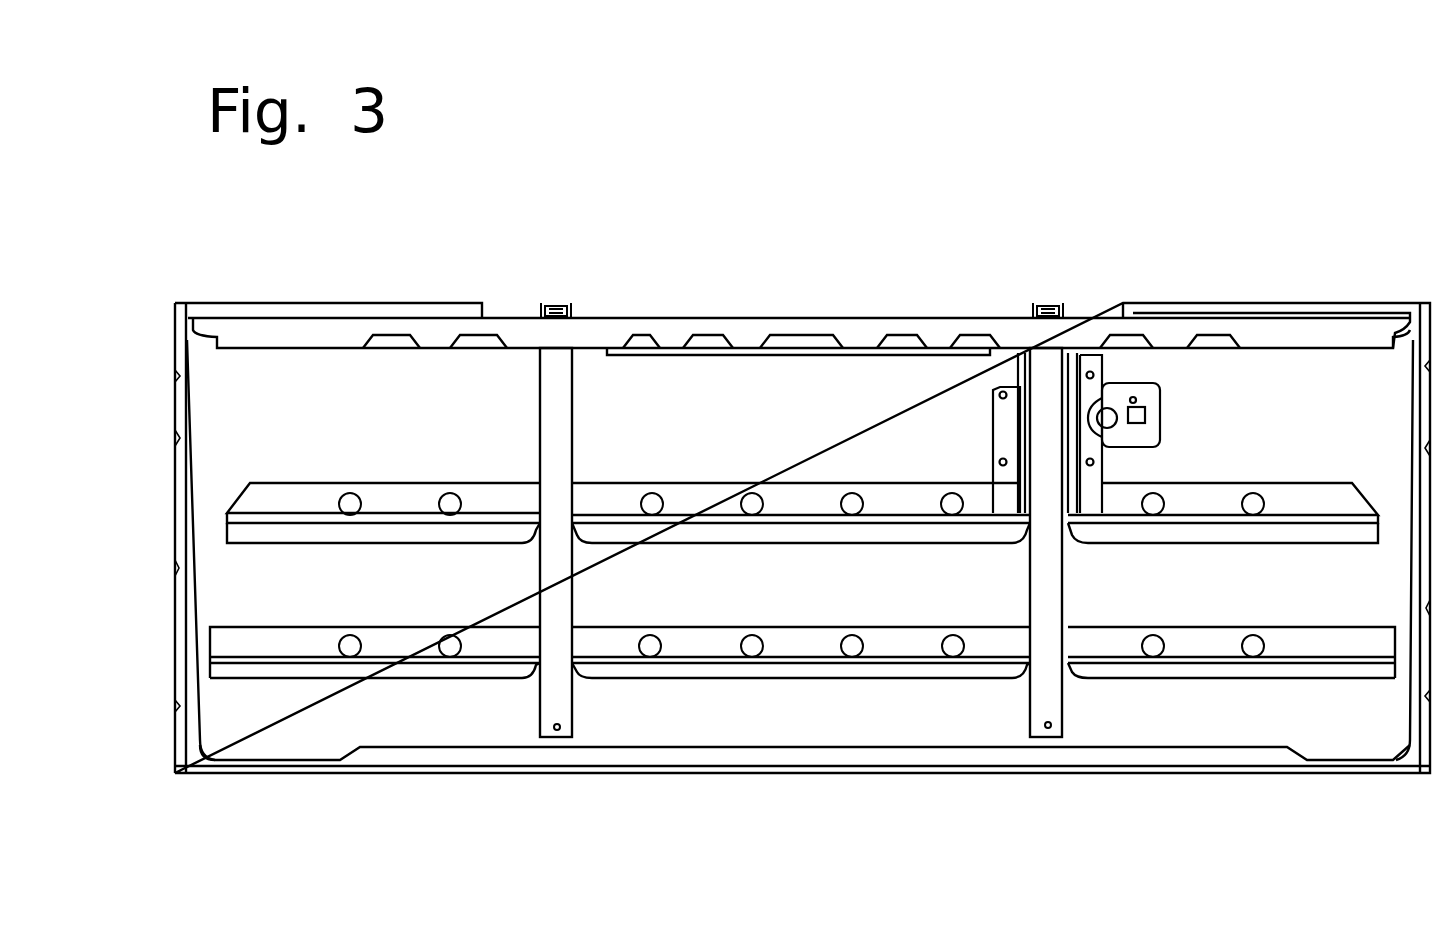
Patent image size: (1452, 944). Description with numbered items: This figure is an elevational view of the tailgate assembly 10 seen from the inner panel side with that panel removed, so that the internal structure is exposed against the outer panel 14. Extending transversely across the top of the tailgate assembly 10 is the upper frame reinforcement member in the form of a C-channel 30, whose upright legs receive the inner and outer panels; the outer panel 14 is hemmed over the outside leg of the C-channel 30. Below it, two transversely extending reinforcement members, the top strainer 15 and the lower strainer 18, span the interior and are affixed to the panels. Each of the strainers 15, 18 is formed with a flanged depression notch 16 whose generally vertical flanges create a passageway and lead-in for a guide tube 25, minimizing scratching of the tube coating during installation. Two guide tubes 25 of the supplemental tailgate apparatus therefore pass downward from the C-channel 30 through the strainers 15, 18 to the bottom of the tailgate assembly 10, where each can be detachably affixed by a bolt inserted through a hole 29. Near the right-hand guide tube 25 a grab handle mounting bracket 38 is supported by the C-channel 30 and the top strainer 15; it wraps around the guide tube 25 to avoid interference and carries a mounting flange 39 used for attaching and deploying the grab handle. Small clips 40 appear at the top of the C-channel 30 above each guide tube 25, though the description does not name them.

The tailgate assembly 10 is at (1198, 258).
The outer panel 14 is at (226, 403).
The top strainer 15 is at (681, 493).
The flanged depression notch 16 is at (582, 546).
The lower strainer 18 is at (907, 637).
The guide tube 25 is at (550, 438).
The hole 29 is at (555, 732).
The C-channel 30 is at (615, 317).
The grab handle mounting bracket 38 is at (1090, 475).
The mounting flange 39 is at (1153, 403).
The clip 40 is at (546, 303).